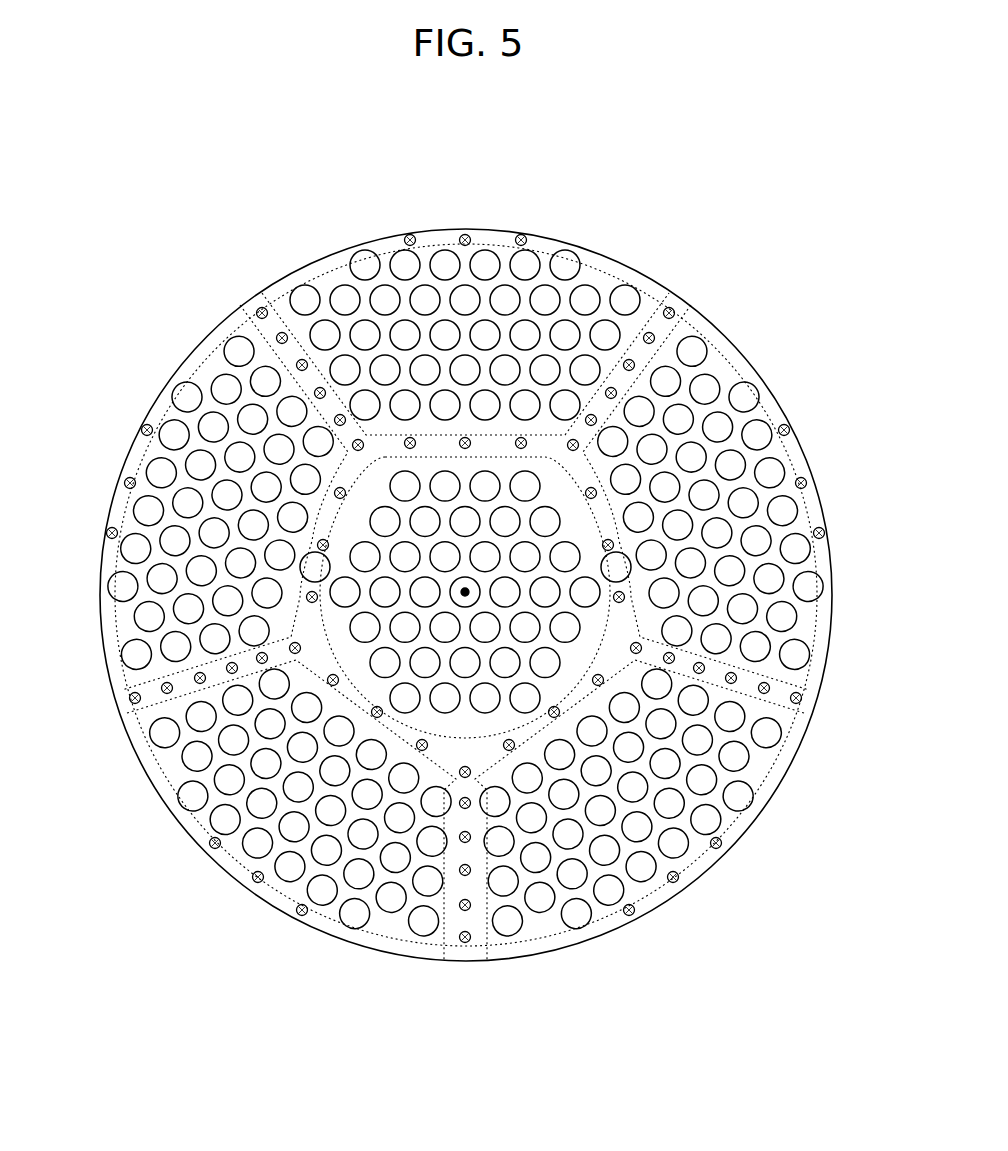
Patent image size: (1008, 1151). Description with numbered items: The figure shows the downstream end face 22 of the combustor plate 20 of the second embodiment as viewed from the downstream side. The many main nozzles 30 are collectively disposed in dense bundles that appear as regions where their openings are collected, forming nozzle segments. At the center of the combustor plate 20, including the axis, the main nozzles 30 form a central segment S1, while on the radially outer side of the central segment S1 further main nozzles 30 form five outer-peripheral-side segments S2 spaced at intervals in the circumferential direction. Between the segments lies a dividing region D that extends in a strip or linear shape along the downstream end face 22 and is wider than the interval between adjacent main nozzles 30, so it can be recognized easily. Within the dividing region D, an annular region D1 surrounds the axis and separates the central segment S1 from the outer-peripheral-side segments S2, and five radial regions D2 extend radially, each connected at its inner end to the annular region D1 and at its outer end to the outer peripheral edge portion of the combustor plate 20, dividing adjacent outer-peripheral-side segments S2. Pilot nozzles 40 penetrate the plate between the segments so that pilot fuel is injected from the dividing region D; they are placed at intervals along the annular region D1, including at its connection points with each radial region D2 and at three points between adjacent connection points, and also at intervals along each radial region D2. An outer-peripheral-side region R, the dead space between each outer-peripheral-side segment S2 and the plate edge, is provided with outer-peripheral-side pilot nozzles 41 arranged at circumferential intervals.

The combustor plate 20 is at (575, 952).
The downstream end face 22 is at (616, 930).
The main nozzle 30 is at (342, 288).
The pilot nozzle 40 is at (357, 430).
The outer-peripheral-side pilot nozzle 41 is at (410, 234).
The outer-peripheral-side region R is at (430, 234).
The dividing region D is at (286, 890).
The annular region D1 is at (366, 726).
The radial region D2 is at (245, 305).
The central segment S1 is at (463, 460).
The outer-peripheral-side segment S2 is at (616, 268).